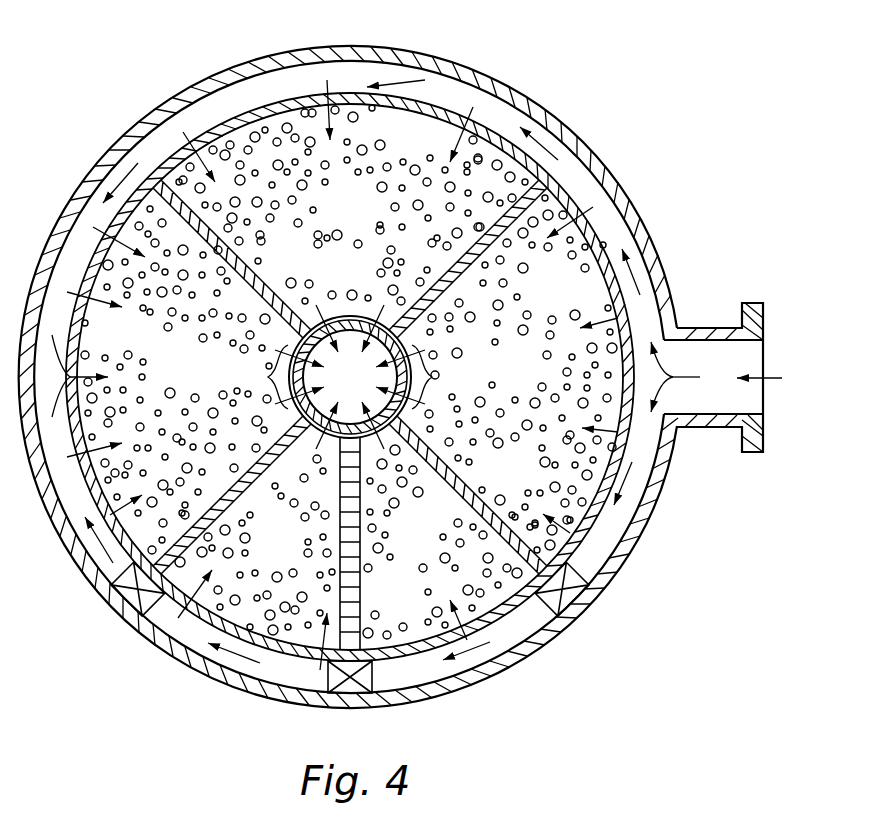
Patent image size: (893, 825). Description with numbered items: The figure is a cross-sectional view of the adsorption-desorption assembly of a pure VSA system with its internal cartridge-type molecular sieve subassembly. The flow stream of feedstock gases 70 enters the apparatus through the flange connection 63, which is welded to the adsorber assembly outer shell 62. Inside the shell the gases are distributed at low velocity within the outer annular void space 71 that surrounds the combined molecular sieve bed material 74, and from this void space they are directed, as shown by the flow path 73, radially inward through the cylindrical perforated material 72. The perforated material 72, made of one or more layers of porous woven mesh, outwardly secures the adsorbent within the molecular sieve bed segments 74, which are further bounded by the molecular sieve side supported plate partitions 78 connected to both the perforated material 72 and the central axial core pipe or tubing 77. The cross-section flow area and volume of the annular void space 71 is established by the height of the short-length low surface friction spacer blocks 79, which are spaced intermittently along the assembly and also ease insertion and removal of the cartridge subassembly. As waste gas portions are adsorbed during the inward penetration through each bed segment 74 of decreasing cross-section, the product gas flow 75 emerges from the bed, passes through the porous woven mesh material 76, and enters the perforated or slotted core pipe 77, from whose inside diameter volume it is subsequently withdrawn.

The adsorber assembly outer shell 62 is at (612, 175).
The flange connection 63 is at (758, 308).
The flow stream of feedstock gases 70 is at (782, 377).
The outer annular void space 71 is at (612, 228).
The cylindrical perforated material 72 is at (608, 280).
The flow direction path 73 is at (455, 138).
The molecular sieve bed segments 74 is at (358, 214).
The product gas flow 75 is at (347, 377).
The porous woven mesh material 76 is at (347, 318).
The central axial core pipe or tubing 77 is at (306, 322).
The plate partitions 78 is at (462, 460).
The low surface friction spacer blocks 79 is at (156, 612).